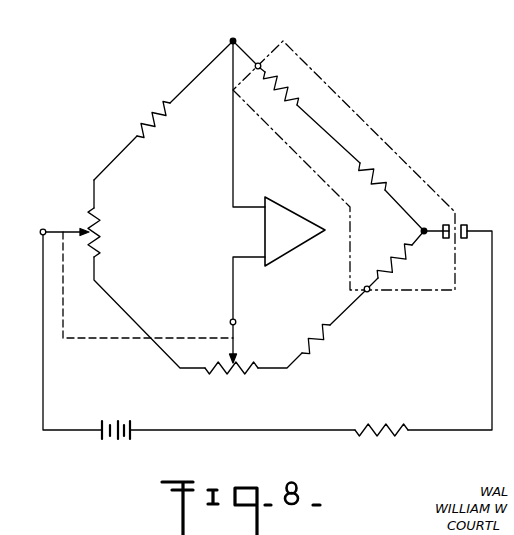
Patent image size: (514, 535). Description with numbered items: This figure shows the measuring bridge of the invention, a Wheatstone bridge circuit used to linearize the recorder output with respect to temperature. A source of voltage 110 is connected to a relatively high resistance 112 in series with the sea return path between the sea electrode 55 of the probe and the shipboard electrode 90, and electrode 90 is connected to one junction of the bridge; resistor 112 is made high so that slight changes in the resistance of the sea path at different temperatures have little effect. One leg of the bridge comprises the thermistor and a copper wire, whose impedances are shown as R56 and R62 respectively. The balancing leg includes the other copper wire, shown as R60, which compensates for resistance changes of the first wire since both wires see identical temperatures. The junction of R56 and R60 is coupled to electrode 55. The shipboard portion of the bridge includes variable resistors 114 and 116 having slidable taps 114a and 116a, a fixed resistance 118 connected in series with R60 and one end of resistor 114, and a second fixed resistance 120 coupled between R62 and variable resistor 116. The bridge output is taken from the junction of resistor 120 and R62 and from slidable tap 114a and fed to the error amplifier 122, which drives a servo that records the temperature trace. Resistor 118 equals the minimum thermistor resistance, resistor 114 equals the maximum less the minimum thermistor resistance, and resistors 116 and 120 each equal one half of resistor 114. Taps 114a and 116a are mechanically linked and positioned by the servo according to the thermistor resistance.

The second fixed resistance 120 is at (147, 133).
The variable resistor 116 is at (100, 220).
The slidable tap 116a is at (67, 229).
The variable resistor 114 is at (233, 372).
The slidable tap 114a is at (236, 345).
The fixed resistance 118 is at (322, 353).
The source of voltage 110 is at (116, 420).
The relatively high resistance 112 is at (380, 423).
The error amplifier 122 is at (282, 186).
The resistance of wire 62 R62 is at (295, 108).
The resistance of thermistor R56 is at (375, 192).
The resistance of wire 60 R60 is at (380, 248).
The sea electrode 55 is at (444, 240).
The shipboard electrode 90 is at (465, 224).